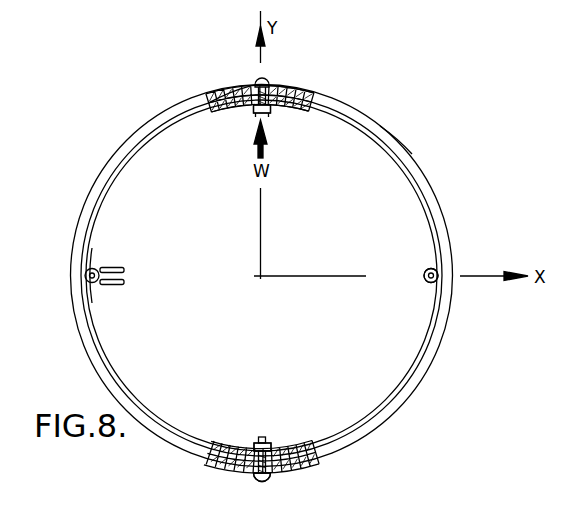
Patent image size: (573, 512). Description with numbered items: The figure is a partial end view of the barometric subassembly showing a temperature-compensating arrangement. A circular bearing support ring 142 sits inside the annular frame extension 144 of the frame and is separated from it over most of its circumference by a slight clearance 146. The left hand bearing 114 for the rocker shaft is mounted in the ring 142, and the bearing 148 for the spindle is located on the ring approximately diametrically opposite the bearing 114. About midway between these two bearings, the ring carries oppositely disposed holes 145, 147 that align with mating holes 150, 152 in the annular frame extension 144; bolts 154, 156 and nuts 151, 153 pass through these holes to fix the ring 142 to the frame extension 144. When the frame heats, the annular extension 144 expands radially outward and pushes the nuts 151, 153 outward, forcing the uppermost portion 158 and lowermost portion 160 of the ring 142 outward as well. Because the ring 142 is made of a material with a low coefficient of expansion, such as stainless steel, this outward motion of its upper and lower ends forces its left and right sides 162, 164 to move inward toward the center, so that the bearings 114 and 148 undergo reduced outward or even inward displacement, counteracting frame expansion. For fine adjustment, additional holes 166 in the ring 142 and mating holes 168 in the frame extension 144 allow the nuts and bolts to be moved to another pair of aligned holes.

The left hand bearing 114 is at (420, 275).
The bearing support ring 142 is at (426, 233).
The annular frame extension 144 is at (432, 202).
The hole 145 is at (244, 102).
The clearance 146 is at (381, 127).
The hole 147 is at (262, 465).
The bearing 148 is at (91, 262).
The mating hole 150 is at (259, 72).
The nut 151 is at (261, 104).
The mating hole 152 is at (246, 462).
The nut 153 is at (261, 433).
The bolt 154 is at (306, 88).
The bolt 156 is at (243, 433).
The uppermost portion 158 is at (397, 185).
The lowermost portion 160 is at (197, 429).
The left side 162 is at (93, 322).
The right side 164 is at (416, 271).
The additional holes 166 is at (219, 101).
The mating holes 168 is at (209, 86).